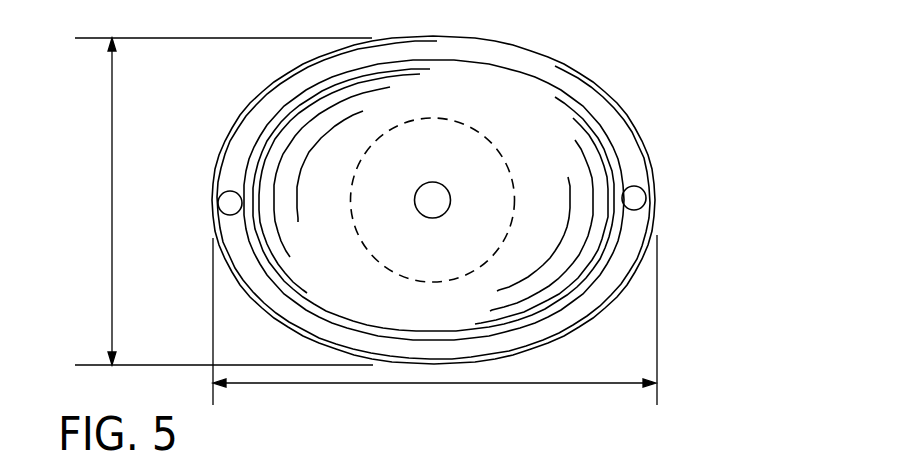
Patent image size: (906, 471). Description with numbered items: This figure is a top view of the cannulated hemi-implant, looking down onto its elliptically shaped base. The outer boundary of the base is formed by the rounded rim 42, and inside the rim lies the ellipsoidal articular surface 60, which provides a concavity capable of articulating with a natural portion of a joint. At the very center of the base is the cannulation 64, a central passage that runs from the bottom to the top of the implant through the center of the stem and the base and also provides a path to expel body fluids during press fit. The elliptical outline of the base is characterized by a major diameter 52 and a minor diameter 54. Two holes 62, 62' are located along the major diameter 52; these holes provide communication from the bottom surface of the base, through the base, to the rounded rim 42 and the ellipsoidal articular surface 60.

The rounded rim 42 is at (418, 51).
The ellipsoidal articular surface 60 is at (590, 143).
The cannulation 64 is at (450, 195).
The hole 62 is at (187, 198).
The hole 62' is at (694, 184).
The minor diameter 54 is at (112, 227).
The major diameter 52 is at (508, 383).